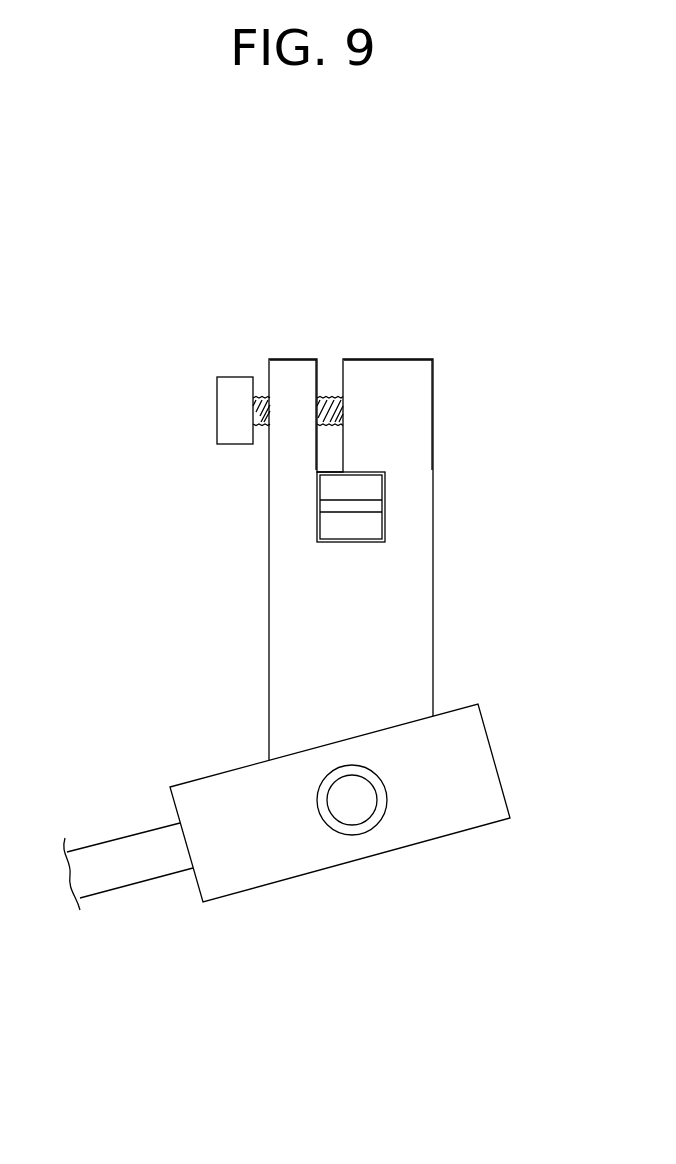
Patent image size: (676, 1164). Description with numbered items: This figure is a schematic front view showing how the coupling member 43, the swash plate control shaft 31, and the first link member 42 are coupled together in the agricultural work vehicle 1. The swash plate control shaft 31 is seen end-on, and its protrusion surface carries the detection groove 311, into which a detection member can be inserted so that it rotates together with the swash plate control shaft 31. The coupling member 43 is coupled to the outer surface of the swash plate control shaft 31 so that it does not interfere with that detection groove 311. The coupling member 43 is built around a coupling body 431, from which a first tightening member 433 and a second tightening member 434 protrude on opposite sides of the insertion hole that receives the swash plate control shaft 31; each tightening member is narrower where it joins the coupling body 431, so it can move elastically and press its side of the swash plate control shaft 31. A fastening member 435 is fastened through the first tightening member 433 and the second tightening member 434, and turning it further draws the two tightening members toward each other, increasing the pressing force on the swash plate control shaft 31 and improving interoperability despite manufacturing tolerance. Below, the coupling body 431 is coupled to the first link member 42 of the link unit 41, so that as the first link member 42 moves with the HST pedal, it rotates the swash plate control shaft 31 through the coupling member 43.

The agricultural work vehicle 1 is at (72, 271).
The coupling member 43 is at (232, 290).
The coupling body 431 is at (417, 568).
The first tightening member 433 is at (297, 388).
The second tightening member 434 is at (385, 388).
The fastening member 435 is at (235, 390).
The swash plate control shaft 31 is at (350, 528).
The detection groove 311 is at (357, 507).
The first link member 42 is at (471, 765).
The link unit 41 is at (209, 916).